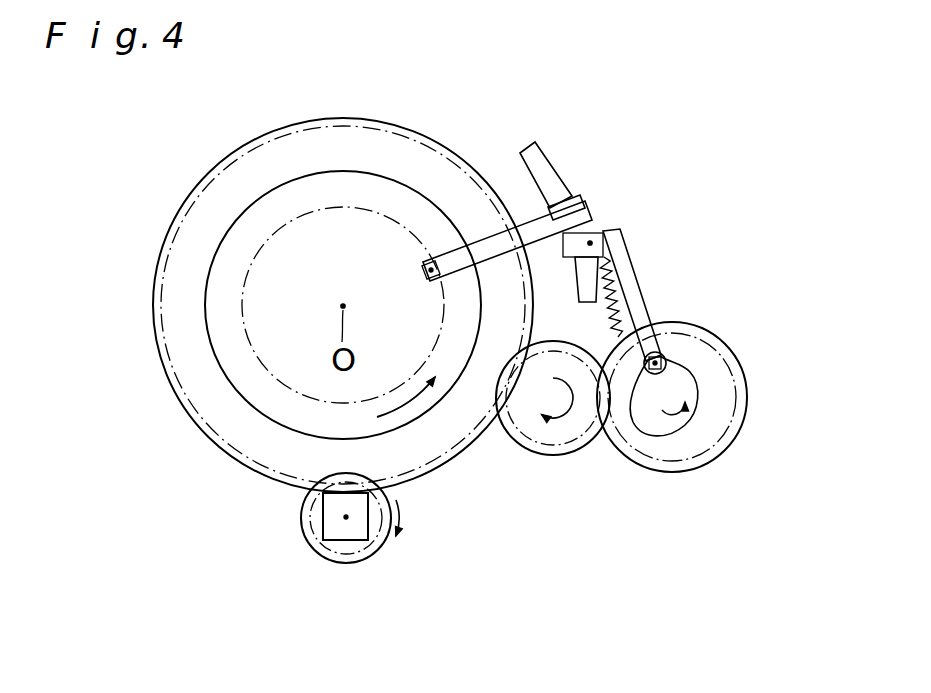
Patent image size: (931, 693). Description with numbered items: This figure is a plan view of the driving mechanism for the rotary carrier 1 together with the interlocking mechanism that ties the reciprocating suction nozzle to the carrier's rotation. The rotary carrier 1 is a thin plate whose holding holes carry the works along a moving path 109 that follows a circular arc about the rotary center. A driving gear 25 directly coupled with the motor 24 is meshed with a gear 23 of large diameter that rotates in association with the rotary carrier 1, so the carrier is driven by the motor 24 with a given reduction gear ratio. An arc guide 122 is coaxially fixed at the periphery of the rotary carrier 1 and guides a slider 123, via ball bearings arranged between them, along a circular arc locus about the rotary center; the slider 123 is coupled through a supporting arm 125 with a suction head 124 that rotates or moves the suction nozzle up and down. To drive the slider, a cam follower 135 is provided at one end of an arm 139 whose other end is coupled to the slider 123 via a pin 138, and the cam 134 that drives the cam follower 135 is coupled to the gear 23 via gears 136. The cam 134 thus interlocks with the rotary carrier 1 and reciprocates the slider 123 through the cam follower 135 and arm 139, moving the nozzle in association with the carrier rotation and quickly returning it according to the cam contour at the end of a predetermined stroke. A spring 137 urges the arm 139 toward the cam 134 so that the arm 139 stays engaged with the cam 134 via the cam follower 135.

The rotary carrier 1 is at (237, 393).
The gear 23 is at (416, 147).
The motor 24 is at (358, 528).
The driving gear 25 is at (305, 538).
The moving path 109 is at (297, 395).
The arc guide 122 is at (547, 170).
The slider 123 is at (578, 206).
The suction head 124 is at (434, 283).
The supporting arm 125 is at (503, 252).
The cam 134 is at (683, 375).
The cam follower 135 is at (665, 352).
The gears 136 is at (600, 445).
The spring 137 is at (615, 282).
The pin 138 is at (598, 240).
The arm 139 is at (620, 245).